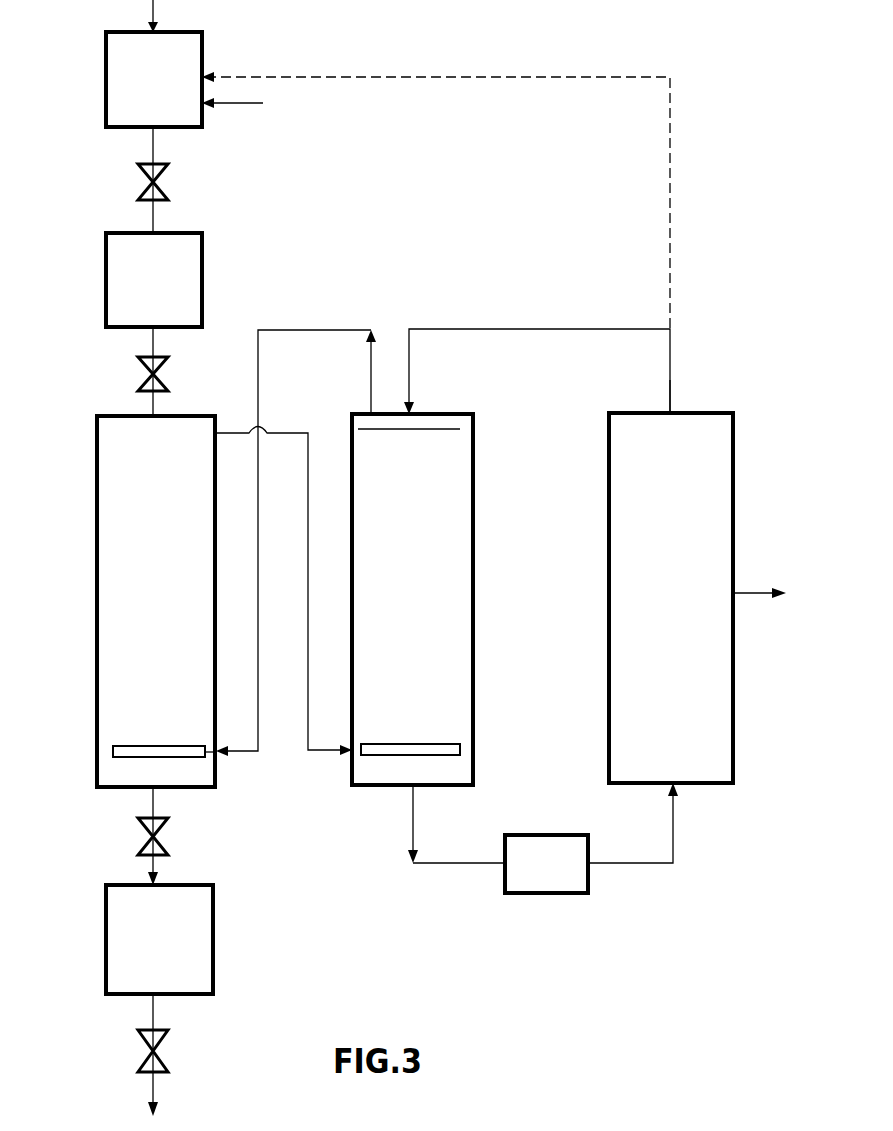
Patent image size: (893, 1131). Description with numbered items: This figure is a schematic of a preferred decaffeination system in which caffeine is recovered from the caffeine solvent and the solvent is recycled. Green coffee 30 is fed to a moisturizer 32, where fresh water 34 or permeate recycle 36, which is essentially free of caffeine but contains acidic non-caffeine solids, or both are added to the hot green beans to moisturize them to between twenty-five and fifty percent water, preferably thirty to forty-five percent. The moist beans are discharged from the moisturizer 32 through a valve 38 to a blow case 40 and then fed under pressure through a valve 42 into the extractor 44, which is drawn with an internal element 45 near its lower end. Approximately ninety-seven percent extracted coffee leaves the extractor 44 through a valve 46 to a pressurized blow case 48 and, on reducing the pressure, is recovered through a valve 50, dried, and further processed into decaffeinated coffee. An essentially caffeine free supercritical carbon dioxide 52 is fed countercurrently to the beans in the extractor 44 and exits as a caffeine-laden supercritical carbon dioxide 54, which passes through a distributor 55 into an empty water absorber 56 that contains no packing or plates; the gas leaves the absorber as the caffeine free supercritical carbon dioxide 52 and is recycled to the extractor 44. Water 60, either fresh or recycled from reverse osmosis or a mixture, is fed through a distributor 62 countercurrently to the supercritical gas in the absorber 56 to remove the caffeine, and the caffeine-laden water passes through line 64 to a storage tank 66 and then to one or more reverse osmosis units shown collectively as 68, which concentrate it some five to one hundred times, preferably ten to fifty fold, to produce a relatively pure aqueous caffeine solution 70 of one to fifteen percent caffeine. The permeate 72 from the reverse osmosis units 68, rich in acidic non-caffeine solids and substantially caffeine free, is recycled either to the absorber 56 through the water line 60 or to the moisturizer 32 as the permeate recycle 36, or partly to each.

The green coffee 30 is at (150, 14).
The moisturizer 32 is at (168, 91).
The fresh water 34 is at (226, 104).
The permeate recycle 36 is at (424, 73).
The valve 38 is at (162, 178).
The blow case 40 is at (168, 293).
The valve 42 is at (144, 376).
The extractor 44 is at (166, 615).
The sensor element 45 is at (155, 745).
The valve 46 is at (165, 830).
The pressurized blow case 48 is at (171, 950).
The valve 50 is at (166, 1046).
The essentially caffeine free supercritical carbon dioxide 52 is at (325, 329).
The caffeine-laden supercritical carbon dioxide 54 is at (282, 432).
The distributor 55 is at (410, 743).
The water absorber 56 is at (424, 615).
The water 60 is at (556, 328).
The distributor 62 is at (452, 429).
The line 64 is at (480, 864).
The storage tank 66 is at (560, 875).
The reverse osmosis units 68 is at (685, 615).
The aqueous caffeine solution 70 is at (757, 594).
The permeate 72 is at (672, 398).